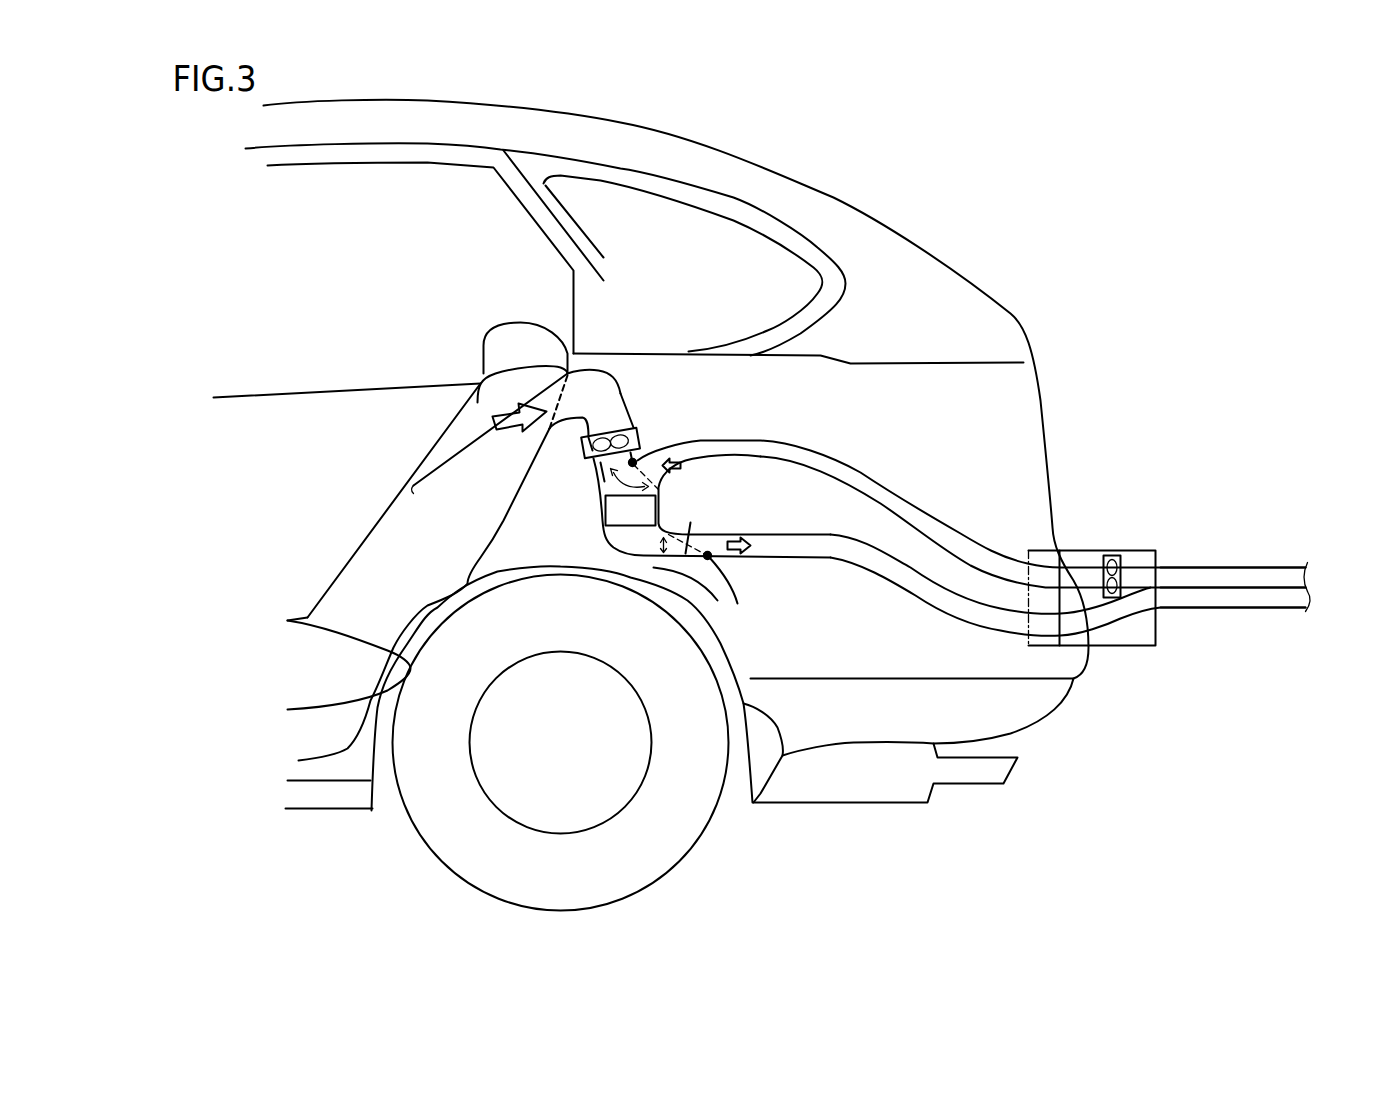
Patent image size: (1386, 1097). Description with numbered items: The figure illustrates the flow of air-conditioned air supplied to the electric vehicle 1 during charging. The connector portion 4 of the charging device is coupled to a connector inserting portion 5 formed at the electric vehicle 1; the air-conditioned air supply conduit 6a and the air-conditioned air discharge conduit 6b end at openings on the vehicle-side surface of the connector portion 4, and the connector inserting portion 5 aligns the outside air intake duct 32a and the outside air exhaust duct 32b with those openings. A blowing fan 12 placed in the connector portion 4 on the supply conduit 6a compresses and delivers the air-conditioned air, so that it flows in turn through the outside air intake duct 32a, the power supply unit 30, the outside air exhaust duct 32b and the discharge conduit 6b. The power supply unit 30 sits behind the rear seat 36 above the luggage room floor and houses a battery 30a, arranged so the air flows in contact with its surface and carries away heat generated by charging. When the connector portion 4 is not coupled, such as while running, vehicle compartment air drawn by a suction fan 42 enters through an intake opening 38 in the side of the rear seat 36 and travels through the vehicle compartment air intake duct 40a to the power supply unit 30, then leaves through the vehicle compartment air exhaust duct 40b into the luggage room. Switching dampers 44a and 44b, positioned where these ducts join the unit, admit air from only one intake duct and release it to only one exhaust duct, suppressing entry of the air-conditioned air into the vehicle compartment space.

The electric vehicle 1 is at (834, 162).
The connector portion 4 is at (1078, 550).
The connector inserting portion 5 is at (1043, 550).
The blowing fan 12 is at (1110, 554).
The air-conditioned air supply conduit 6a is at (1222, 571).
The air-conditioned air discharge conduit 6b is at (1222, 606).
The power supply unit 30 is at (588, 520).
The battery 30a is at (645, 505).
The outside air intake duct 32a is at (793, 452).
The outside air exhaust duct 32b is at (793, 542).
The rear seat 36 is at (371, 533).
The intake opening 38 is at (414, 488).
The vehicle compartment air intake duct 40a is at (622, 419).
The vehicle compartment air exhaust duct 40b is at (715, 581).
The suction fan 42 is at (638, 429).
The switching damper 44a is at (598, 473).
The switching damper 44b is at (687, 528).